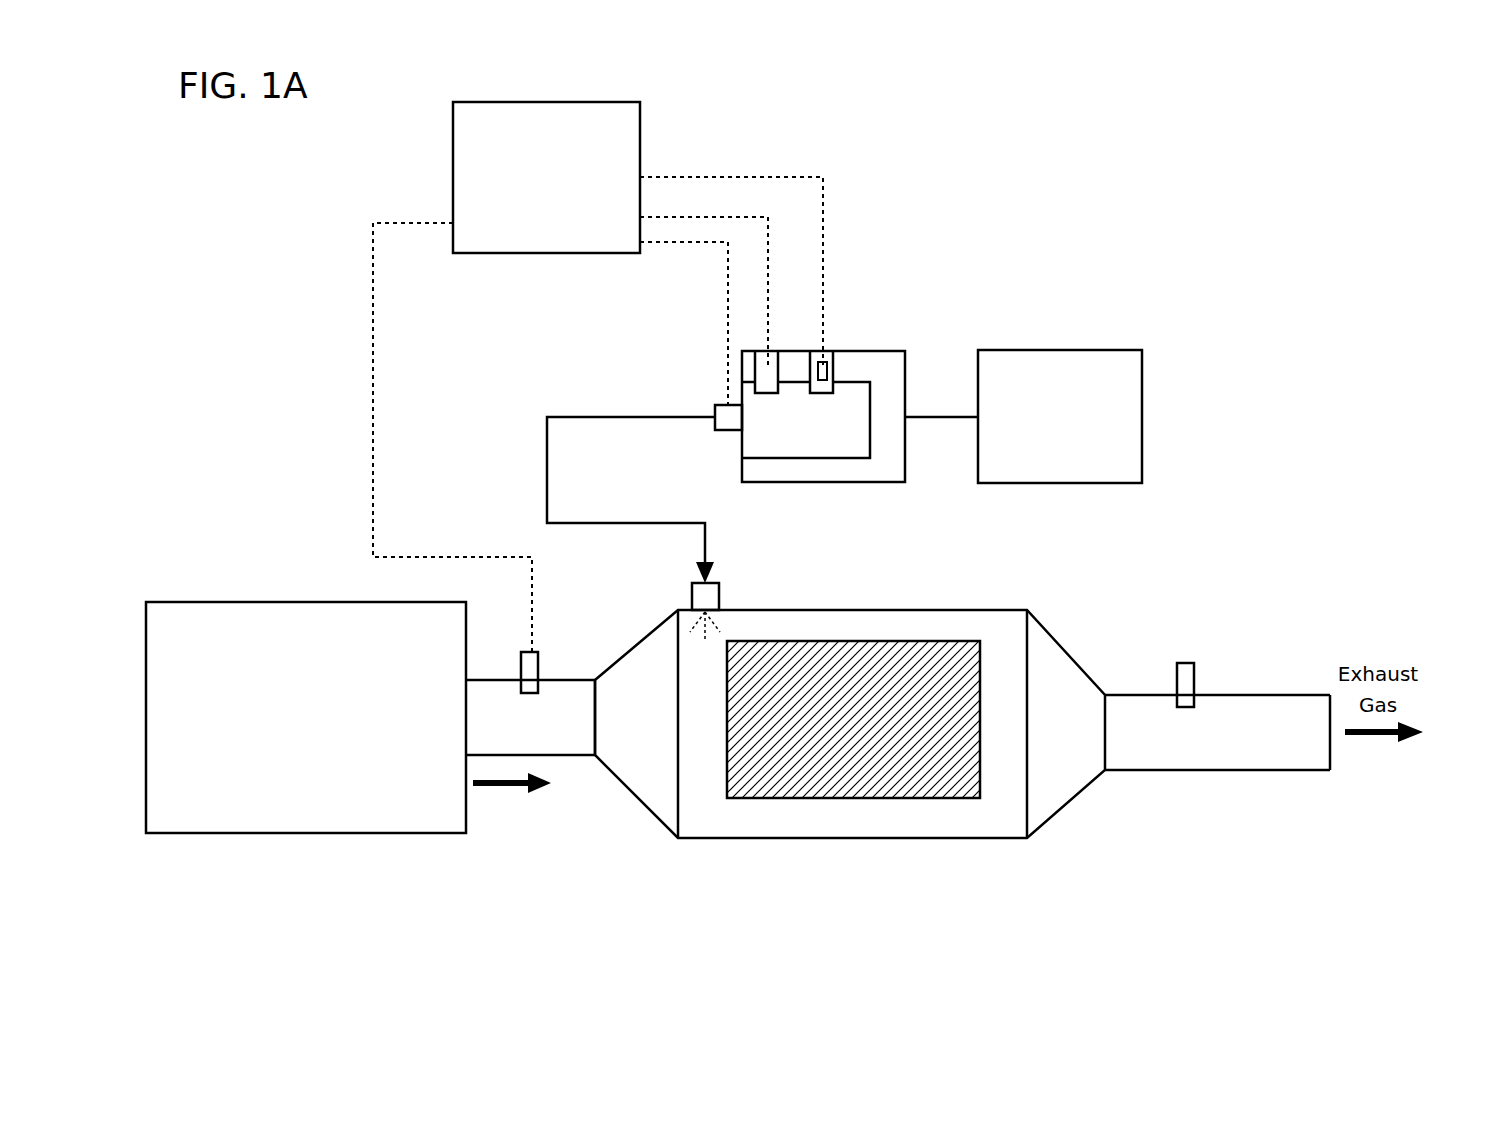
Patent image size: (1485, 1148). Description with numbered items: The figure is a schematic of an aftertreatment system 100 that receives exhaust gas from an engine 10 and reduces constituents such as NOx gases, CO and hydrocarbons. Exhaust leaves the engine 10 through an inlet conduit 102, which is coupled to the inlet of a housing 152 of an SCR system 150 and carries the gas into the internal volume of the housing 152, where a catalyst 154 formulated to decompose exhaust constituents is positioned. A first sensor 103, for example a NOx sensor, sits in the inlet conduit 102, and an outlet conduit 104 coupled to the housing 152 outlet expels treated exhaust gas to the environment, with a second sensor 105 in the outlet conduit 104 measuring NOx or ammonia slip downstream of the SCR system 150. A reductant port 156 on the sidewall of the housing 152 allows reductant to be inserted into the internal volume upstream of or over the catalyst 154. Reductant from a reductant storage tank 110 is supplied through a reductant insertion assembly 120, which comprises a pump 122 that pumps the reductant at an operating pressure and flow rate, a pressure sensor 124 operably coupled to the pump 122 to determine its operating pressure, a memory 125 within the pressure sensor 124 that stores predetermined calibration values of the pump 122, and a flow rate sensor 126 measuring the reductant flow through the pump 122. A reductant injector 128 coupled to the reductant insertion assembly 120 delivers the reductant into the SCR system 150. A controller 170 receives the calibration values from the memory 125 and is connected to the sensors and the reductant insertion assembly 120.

The aftertreatment system 100 is at (1222, 195).
The engine 10 is at (293, 743).
The controller 170 is at (527, 204).
The reductant storage tank 110 is at (1041, 472).
The reductant insertion assembly 120 is at (886, 342).
The pump 122 is at (828, 438).
The pressure sensor 124 is at (824, 362).
The memory 125 is at (827, 373).
The flow rate sensor 126 is at (772, 362).
The reductant injector 128 is at (721, 408).
The inlet conduit 102 is at (578, 740).
The first sensor 103 is at (538, 668).
The outlet conduit 104 is at (1293, 760).
The second sensor 105 is at (1193, 680).
The SCR system 150 is at (813, 850).
The housing 152 is at (907, 840).
The catalyst 154 is at (943, 785).
The reductant port 156 is at (705, 598).